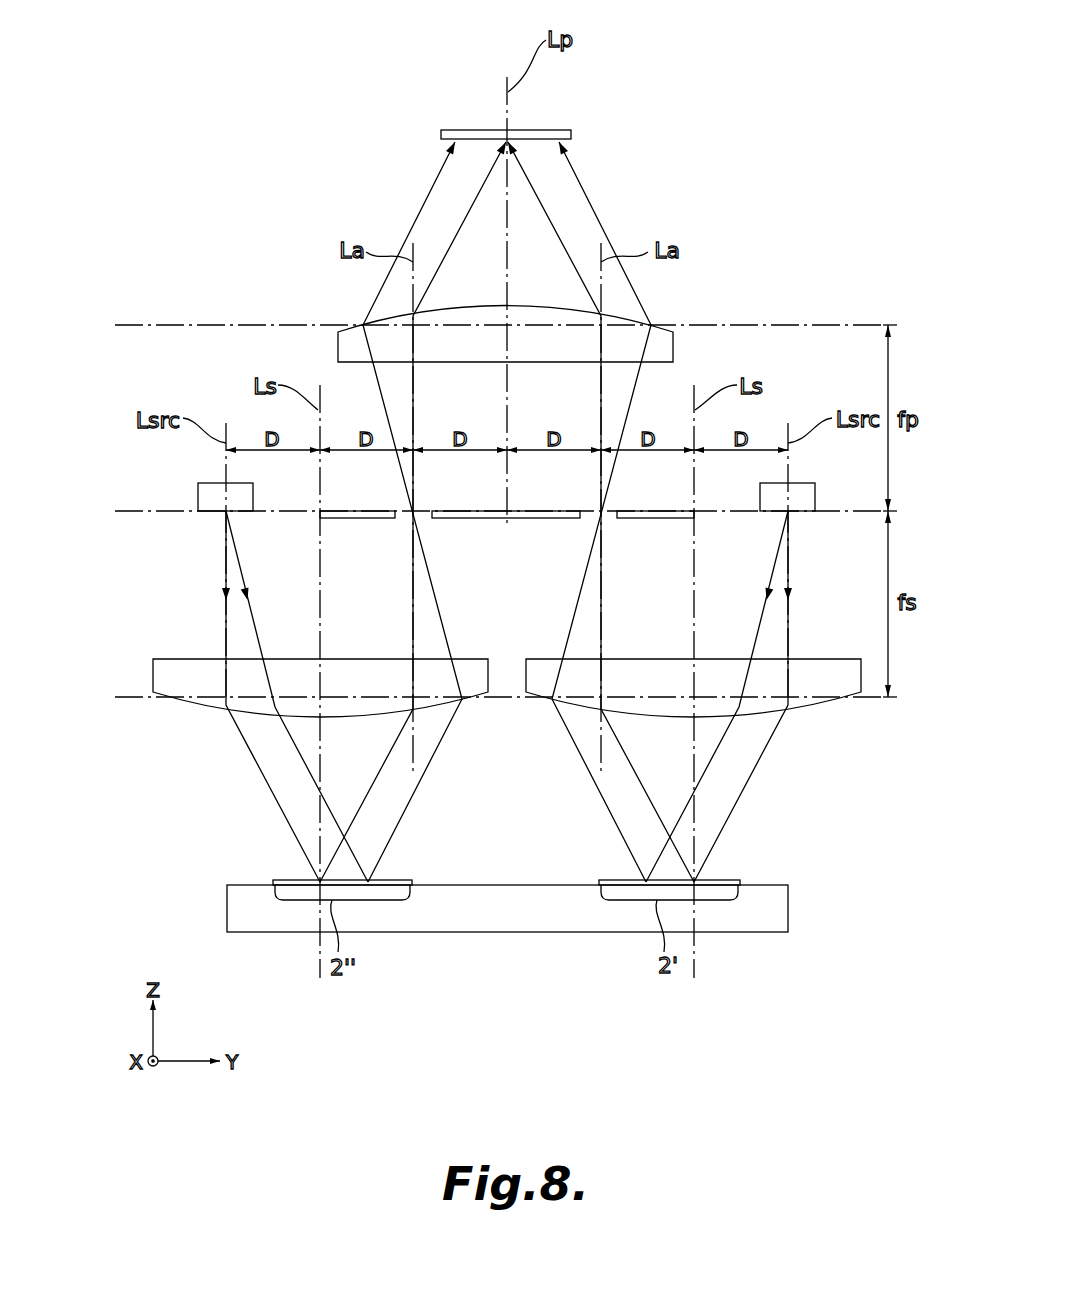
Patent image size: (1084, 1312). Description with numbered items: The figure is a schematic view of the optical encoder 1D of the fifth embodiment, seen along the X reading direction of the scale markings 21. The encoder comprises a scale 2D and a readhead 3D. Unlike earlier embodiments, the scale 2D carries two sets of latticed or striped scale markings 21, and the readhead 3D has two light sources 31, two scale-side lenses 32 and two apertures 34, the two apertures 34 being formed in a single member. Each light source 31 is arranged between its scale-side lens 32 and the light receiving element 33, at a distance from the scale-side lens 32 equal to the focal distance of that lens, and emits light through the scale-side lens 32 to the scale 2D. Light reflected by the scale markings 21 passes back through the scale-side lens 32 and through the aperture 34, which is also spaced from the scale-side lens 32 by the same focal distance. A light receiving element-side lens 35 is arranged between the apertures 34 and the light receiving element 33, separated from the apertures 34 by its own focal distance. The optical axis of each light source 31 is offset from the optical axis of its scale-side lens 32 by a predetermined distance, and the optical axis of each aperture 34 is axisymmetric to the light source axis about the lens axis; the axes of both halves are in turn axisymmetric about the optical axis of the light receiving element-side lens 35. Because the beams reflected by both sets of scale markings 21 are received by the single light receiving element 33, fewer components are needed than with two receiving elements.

The optical encoder 1D is at (755, 165).
The scale 2D is at (775, 908).
The scale markings 21 is at (293, 880).
The readhead 3D is at (190, 543).
The light source 31 is at (200, 500).
The scale-side lens 32 is at (175, 667).
The light receiving element 33 is at (545, 128).
The aperture 34 is at (420, 503).
The light receiving element-side lens 35 is at (673, 348).